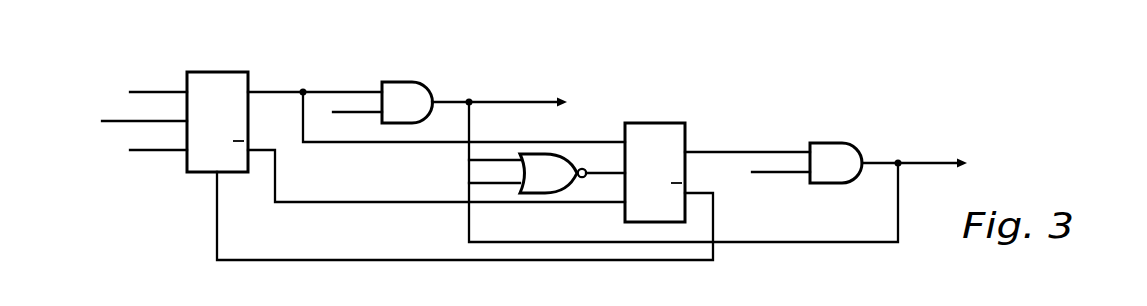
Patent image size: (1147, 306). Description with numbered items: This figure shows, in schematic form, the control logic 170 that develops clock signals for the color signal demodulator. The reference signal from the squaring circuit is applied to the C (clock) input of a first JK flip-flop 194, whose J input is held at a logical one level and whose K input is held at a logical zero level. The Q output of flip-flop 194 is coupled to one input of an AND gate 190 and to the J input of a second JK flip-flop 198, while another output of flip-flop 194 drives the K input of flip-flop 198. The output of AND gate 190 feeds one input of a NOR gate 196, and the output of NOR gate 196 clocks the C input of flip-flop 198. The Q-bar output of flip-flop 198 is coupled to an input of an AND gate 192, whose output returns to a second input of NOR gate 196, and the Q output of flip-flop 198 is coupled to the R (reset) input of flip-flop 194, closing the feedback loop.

The control logic 170 is at (383, 185).
The AND gate 190 is at (407, 102).
The AND gate 192 is at (836, 163).
The JK flip-flop 194 is at (190, 173).
The NOR gate 196 is at (553, 173).
The second JK flip-flop 198 is at (685, 123).